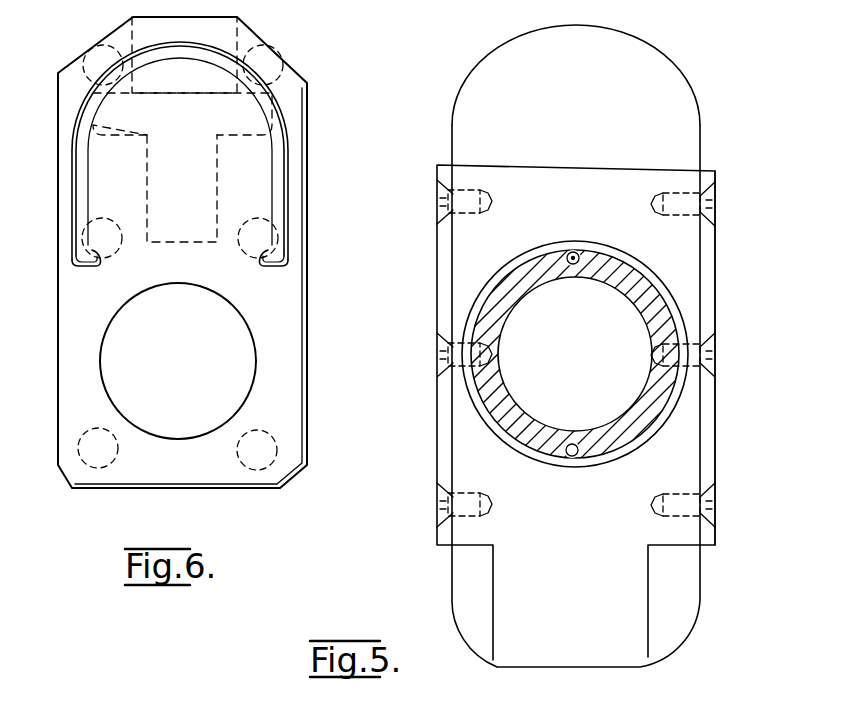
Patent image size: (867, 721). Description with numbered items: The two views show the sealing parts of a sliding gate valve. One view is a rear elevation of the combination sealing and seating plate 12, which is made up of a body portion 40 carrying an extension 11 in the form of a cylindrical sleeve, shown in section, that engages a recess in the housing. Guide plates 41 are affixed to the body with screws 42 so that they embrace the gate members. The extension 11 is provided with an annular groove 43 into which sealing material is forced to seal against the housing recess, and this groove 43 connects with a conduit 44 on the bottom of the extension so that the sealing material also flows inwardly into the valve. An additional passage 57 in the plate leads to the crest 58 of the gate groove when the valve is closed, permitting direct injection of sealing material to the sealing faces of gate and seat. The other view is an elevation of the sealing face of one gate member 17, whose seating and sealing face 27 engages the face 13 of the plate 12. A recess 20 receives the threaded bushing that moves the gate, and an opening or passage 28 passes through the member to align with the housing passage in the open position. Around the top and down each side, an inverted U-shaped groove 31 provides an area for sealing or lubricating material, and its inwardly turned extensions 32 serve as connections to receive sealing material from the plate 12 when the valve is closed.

In FIG. 5, the extension 11 is at (667, 328).
In FIG. 5, the combination sealing and seating plate 12 is at (702, 135).
In FIG. 5, the face of the plate 13 is at (468, 100).
In FIG. 6, the gate member 17 is at (311, 281).
In FIG. 6, the recess 20 is at (243, 97).
In FIG. 6, the seating and sealing face 27 is at (286, 356).
In FIG. 6, the opening or passage 28 is at (112, 392).
In FIG. 6, the inverted U-shaped groove 31 is at (294, 177).
In FIG. 6, the inwardly turned extensions 32 is at (100, 263).
In FIG. 5, the body portion 40 is at (576, 412).
In FIG. 5, the guide plates 41 is at (707, 268).
In FIG. 5, the screws 42 is at (709, 192).
In FIG. 5, the annular groove 43 is at (620, 257).
In FIG. 5, the conduit 44 is at (568, 455).
In FIG. 5, the additional passage 57 is at (575, 251).
In FIG. 6, the crest of the groove 58 is at (208, 30).